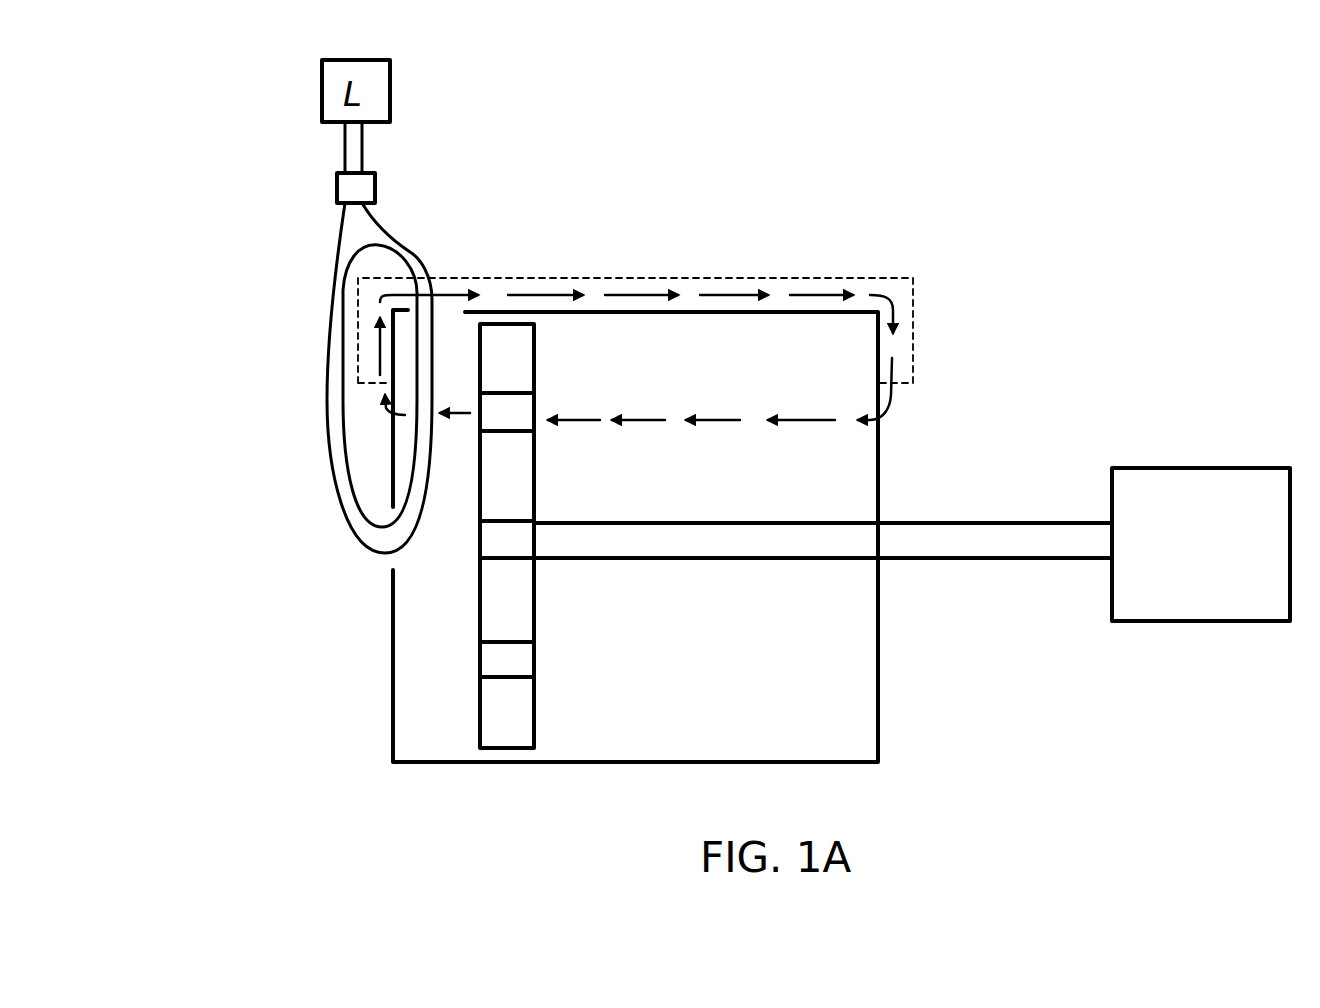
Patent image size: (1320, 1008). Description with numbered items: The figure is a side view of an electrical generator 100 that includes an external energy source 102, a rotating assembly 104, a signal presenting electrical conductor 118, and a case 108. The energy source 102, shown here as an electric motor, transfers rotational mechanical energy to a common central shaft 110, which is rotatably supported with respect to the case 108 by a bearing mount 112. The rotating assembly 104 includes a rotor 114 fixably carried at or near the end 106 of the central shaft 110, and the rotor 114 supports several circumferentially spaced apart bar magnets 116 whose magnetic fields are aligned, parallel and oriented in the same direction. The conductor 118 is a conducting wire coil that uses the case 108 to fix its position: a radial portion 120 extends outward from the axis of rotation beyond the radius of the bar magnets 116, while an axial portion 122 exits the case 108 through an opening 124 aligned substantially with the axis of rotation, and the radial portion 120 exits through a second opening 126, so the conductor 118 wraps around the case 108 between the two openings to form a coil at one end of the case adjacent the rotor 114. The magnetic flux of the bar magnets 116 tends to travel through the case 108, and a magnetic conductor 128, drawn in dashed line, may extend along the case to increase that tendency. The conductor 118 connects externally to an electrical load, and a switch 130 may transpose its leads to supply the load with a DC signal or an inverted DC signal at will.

The electrical generator 100 is at (978, 146).
The external energy source 102 is at (1218, 467).
The rotating assembly 104 is at (711, 585).
The end of the central shaft 106 is at (472, 545).
The case 108 is at (878, 660).
The central shaft 110 is at (940, 522).
The bearing mount 112 is at (876, 521).
The rotor 114 is at (534, 598).
The bar magnets 116 is at (534, 407).
The electrical conductor 118 is at (404, 257).
The radial portion of the conductor 120 is at (415, 437).
The axial portion of the conductor 122 is at (387, 553).
The opening 124 is at (385, 573).
The opening 126 is at (453, 302).
The magnetic conductor 128 is at (913, 283).
The switch 130 is at (337, 190).